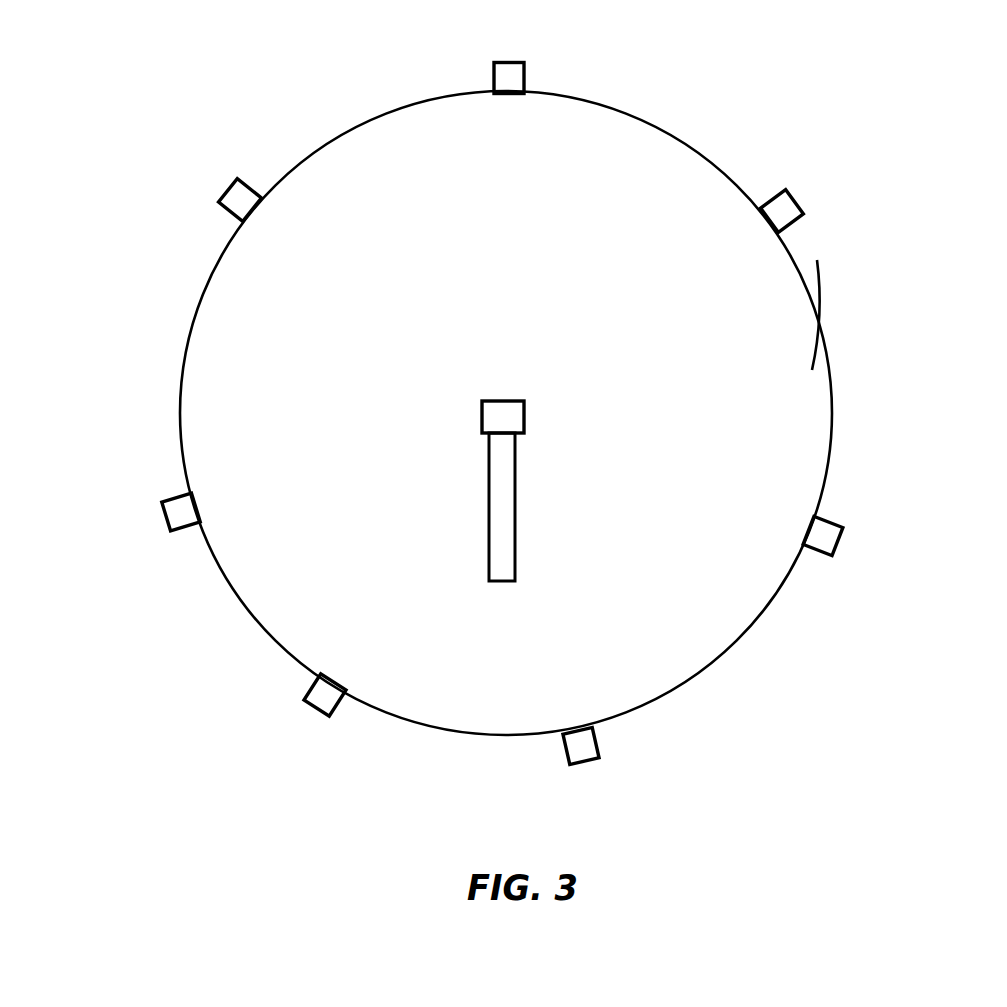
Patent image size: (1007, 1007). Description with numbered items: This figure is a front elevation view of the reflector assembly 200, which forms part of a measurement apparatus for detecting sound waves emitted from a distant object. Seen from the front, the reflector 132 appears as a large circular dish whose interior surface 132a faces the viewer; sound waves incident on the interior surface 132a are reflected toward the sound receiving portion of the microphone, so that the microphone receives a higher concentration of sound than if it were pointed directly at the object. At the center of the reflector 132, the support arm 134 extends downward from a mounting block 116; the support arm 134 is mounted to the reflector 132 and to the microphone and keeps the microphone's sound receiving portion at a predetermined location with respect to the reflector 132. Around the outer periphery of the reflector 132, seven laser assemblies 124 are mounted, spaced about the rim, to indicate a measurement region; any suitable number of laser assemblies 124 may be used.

The reflector assembly 200 is at (874, 89).
The reflector 132 is at (357, 126).
The interior surface 132a is at (783, 312).
The laser assembly 124 is at (503, 80).
The hub 116 is at (505, 416).
The support arm 134 is at (500, 519).